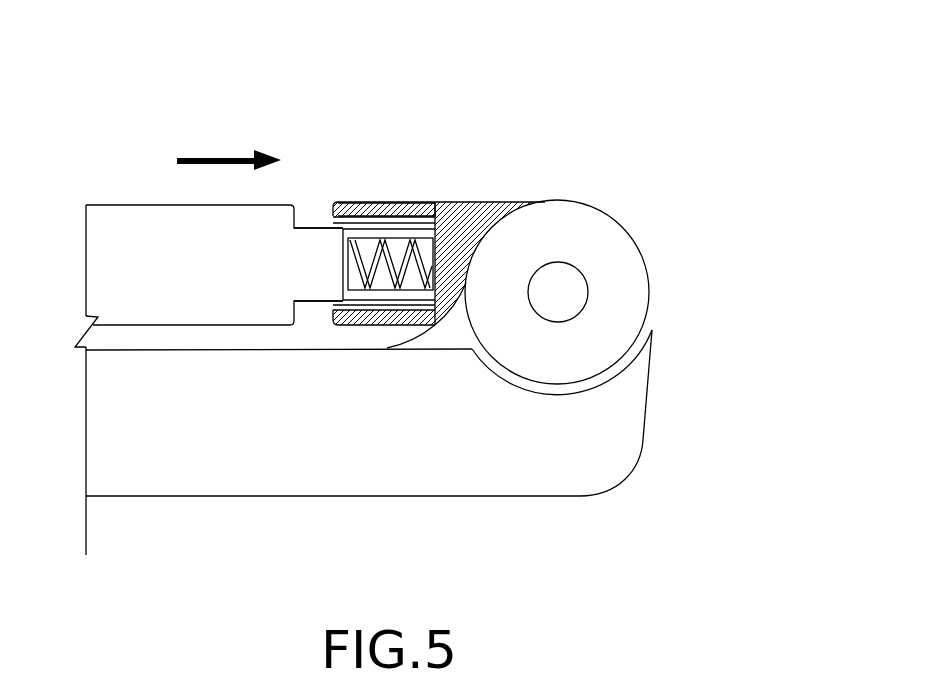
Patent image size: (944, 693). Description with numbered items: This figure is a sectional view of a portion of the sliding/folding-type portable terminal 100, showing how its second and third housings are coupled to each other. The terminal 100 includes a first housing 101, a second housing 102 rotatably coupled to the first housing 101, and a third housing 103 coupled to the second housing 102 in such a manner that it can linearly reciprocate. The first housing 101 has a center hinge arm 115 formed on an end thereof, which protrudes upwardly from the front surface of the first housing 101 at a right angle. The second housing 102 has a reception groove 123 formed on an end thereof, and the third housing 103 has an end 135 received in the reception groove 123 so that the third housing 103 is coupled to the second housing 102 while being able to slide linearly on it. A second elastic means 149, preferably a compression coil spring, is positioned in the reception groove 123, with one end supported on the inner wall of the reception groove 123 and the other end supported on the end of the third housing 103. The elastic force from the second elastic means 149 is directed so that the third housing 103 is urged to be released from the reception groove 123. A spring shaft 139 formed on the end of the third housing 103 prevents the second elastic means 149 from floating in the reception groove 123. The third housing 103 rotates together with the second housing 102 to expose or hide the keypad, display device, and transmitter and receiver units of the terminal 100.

The terminal 100 is at (258, 68).
The first housing 101 is at (403, 488).
The second housing 102 is at (510, 192).
The third housing 103 is at (153, 210).
The center hinge arm 115 is at (627, 282).
The reception groove 123 is at (423, 218).
The end 135 is at (316, 289).
The spring shaft 139 is at (367, 252).
The second elastic means 149 is at (340, 253).